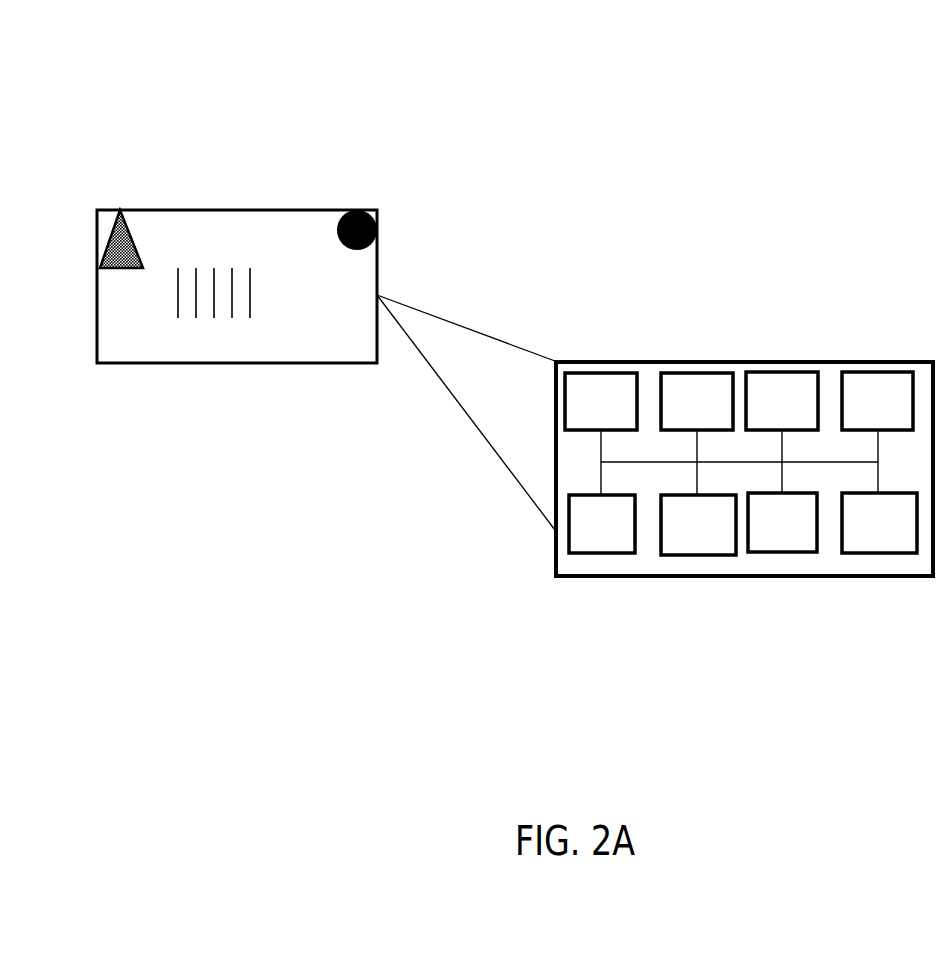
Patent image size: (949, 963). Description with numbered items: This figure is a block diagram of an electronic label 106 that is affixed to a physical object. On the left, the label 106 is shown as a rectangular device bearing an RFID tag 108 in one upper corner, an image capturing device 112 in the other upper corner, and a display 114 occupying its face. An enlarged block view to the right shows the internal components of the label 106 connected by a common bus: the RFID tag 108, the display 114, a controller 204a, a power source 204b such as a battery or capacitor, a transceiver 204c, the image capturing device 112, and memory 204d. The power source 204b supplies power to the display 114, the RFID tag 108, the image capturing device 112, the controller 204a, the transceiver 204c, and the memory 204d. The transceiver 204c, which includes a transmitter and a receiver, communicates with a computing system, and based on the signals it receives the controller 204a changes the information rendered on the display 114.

The electronic label 106 is at (176, 208).
The RFID tag 108 is at (113, 228).
The image capturing device 112 is at (352, 208).
The display 114 is at (317, 315).
The controller 204a is at (782, 401).
The power source 204b is at (877, 401).
The transceiver 204c is at (782, 522).
The memory 204d is at (789, 524).